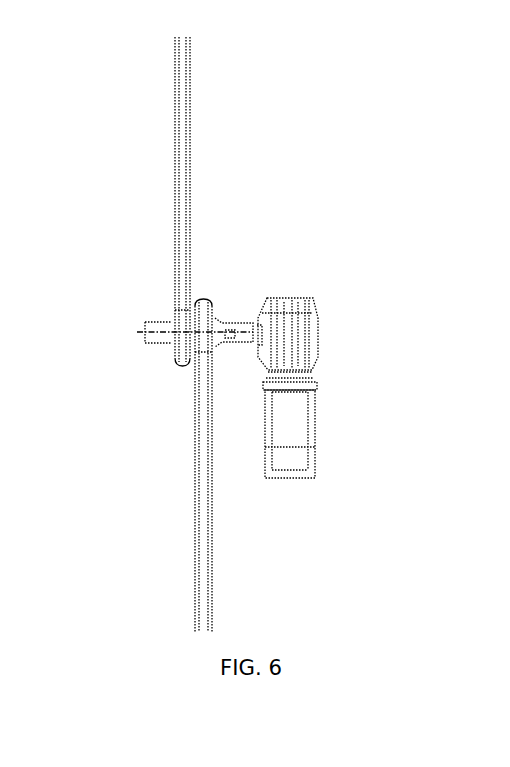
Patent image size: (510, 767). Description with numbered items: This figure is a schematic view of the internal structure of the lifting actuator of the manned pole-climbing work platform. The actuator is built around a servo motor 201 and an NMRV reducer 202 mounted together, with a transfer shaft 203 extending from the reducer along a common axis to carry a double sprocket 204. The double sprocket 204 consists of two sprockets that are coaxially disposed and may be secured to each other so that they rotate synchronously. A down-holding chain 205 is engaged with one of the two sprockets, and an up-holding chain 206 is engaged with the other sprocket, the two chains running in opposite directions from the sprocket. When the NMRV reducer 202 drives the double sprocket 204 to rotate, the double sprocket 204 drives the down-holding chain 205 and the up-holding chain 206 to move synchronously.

The servo motor 201 is at (297, 418).
The NMRV reducer 202 is at (307, 342).
The transfer shaft 203 is at (230, 332).
The double sprocket 204 is at (199, 296).
The down-holding chain 205 is at (199, 443).
The up-holding chain 206 is at (180, 188).